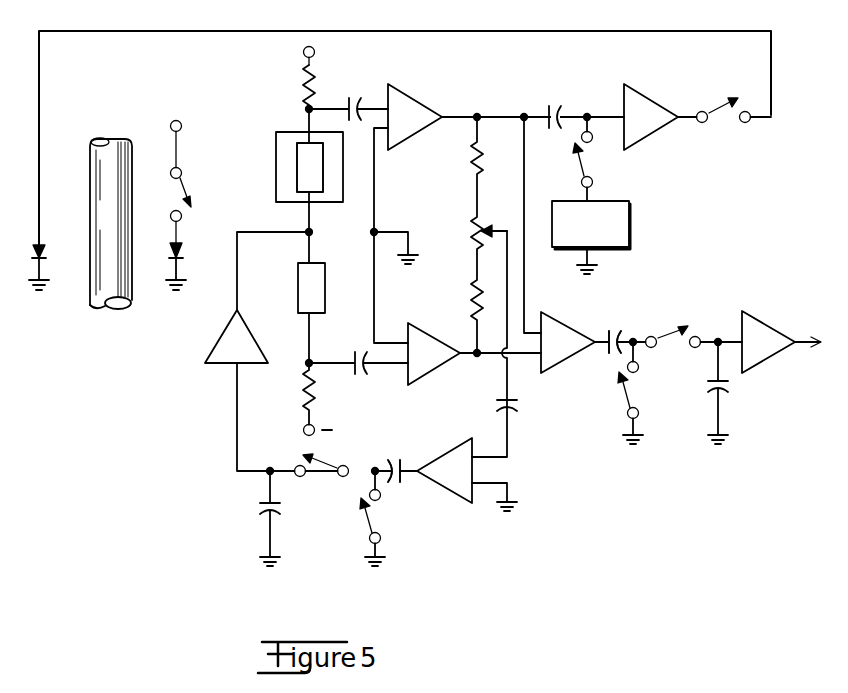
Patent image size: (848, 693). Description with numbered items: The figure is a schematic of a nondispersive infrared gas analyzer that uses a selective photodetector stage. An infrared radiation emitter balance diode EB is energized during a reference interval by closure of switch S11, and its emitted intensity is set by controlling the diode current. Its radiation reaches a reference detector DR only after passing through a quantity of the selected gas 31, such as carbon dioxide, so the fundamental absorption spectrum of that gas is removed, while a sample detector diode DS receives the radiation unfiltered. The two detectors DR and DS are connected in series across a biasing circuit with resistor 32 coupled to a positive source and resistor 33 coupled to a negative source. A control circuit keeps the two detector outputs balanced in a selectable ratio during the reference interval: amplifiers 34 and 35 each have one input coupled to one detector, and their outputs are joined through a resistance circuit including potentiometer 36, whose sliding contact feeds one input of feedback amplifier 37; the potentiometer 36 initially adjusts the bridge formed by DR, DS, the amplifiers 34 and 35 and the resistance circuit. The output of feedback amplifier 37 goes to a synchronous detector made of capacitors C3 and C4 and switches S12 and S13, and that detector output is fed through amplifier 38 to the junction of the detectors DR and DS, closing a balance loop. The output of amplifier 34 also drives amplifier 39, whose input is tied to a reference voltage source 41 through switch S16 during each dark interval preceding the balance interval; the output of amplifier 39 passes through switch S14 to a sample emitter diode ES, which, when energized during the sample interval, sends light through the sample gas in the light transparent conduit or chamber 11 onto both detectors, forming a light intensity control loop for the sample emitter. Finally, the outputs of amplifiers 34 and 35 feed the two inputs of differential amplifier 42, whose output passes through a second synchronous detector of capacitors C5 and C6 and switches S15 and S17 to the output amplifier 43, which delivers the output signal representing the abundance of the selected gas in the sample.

The light transparent conduit or chamber 11 is at (108, 141).
The quantity of the selected gas 31 is at (323, 202).
The resistor 32 is at (306, 82).
The resistor 33 is at (316, 397).
The amplifier 34 is at (402, 90).
The amplifier 35 is at (421, 308).
The potentiometer 36 is at (476, 233).
The feedback amplifier 37 is at (450, 498).
The amplifier 38 is at (224, 334).
The amplifier 39 is at (641, 89).
The reference voltage source 41 is at (631, 224).
The differential amplifier 42 is at (549, 316).
The output amplifier 43 is at (749, 315).
The switch S11 is at (200, 168).
The switch S12 is at (309, 477).
The switch S13 is at (389, 518).
The switch S14 is at (734, 122).
The switch S15 is at (694, 349).
The switch S16 is at (602, 152).
The switch S17 is at (647, 393).
The capacitor C3 is at (258, 518).
The capacitor C4 is at (393, 458).
The capacitor C5 is at (733, 393).
The capacitor C6 is at (614, 331).
The reference detector DR is at (333, 167).
The sample detector diode DS is at (326, 313).
The sample emitter diode ES is at (50, 267).
The infrared radiation emitter balance diode EB is at (188, 256).